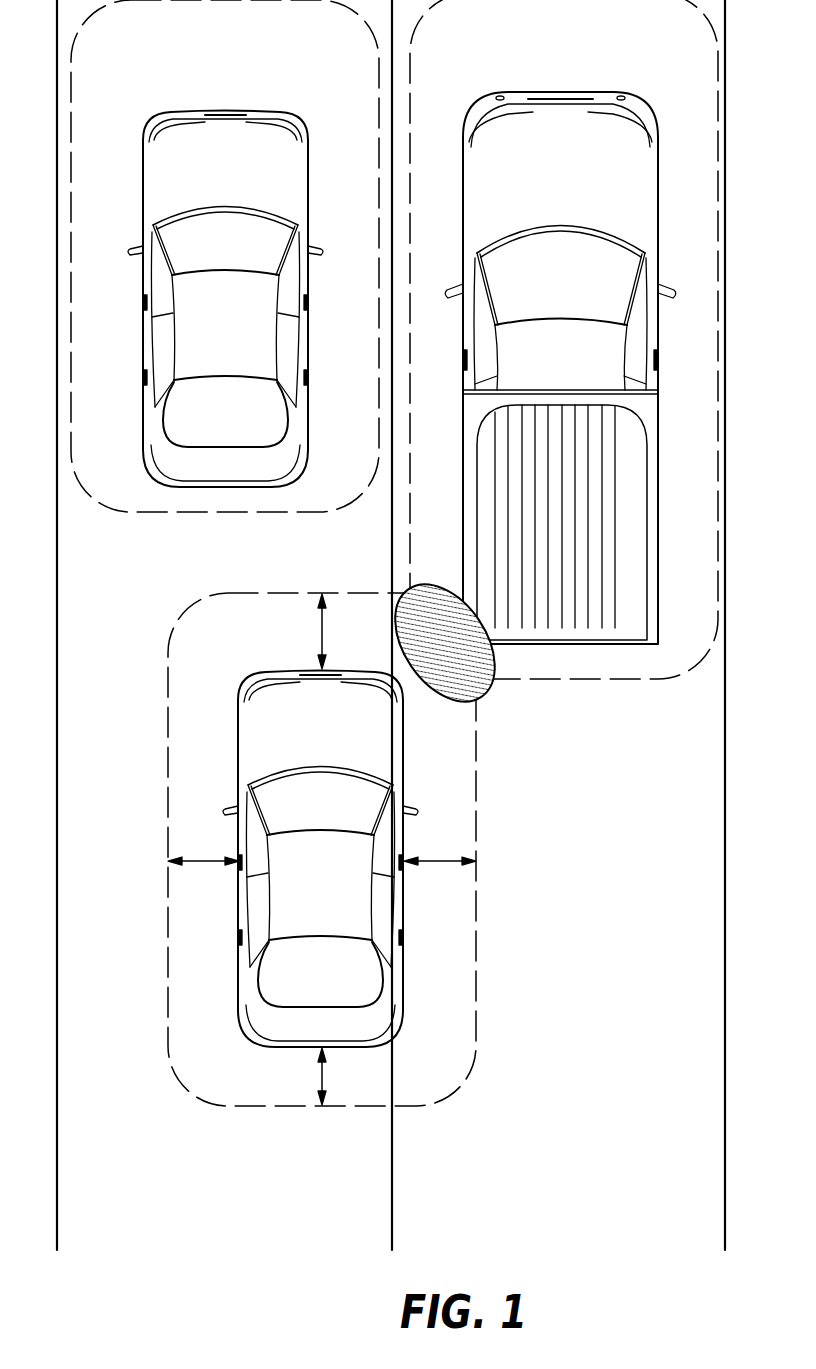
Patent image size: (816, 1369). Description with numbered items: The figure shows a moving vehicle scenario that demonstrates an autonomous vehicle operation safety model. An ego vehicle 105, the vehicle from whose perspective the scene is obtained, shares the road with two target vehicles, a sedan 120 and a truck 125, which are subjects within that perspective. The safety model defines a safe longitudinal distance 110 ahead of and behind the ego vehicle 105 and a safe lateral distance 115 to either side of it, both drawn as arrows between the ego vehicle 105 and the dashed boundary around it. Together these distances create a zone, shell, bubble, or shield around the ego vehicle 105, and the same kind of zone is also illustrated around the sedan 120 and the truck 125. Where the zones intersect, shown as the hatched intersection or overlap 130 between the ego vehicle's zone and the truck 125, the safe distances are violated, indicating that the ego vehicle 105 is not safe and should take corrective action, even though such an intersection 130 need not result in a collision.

The ego vehicle 105 is at (238, 757).
The safe longitudinal distance 110 is at (321, 645).
The safe lateral distance 115 is at (440, 860).
The sedan 120 is at (215, 110).
The truck 125 is at (561, 90).
The intersection or overlap 130 is at (478, 698).